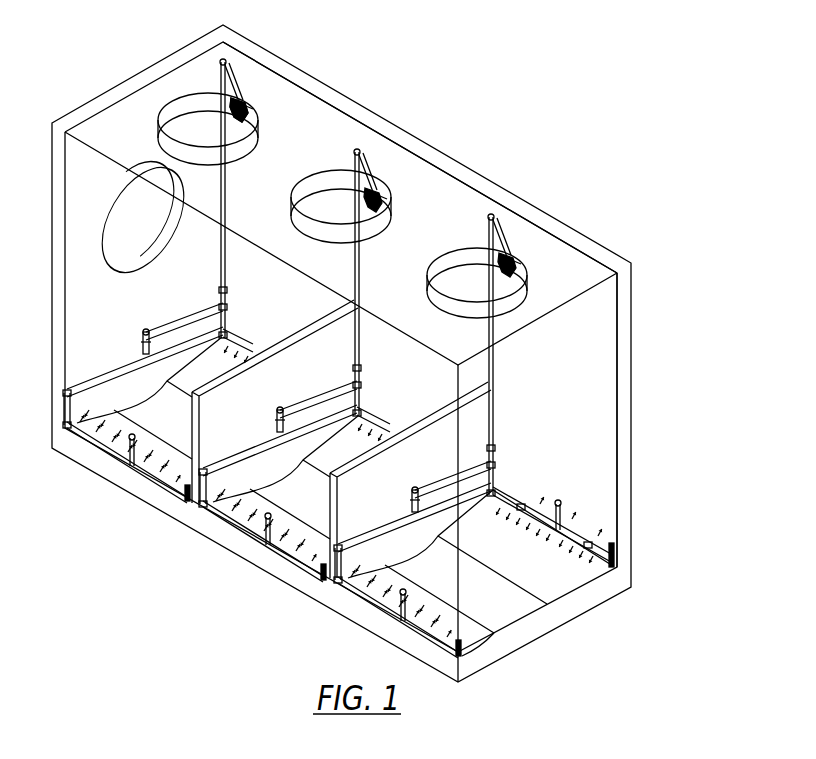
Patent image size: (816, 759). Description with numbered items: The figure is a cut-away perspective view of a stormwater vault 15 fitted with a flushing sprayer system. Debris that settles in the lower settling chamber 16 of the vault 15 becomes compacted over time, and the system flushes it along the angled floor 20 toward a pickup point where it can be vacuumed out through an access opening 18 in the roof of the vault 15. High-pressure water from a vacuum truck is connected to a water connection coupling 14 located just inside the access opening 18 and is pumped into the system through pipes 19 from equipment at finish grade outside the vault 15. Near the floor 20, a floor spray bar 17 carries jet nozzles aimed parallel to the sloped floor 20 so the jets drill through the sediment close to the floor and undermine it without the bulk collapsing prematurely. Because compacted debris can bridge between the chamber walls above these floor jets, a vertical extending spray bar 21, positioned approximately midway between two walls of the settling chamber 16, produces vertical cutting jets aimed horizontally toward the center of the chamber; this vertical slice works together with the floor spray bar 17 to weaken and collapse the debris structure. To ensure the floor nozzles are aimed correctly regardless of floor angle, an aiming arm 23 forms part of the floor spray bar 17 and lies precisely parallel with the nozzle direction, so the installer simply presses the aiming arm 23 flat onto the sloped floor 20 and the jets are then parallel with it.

The water connection coupling 14 is at (237, 98).
The stormwater vault 15 is at (646, 228).
The settling chamber 16 is at (590, 427).
The floor spray bar 17 is at (588, 537).
The access opening 18 is at (265, 110).
The pipe 19 is at (367, 257).
The angled floor 20 is at (557, 582).
The vertical extending spray bar 21 is at (570, 502).
The aiming arm 23 is at (610, 566).